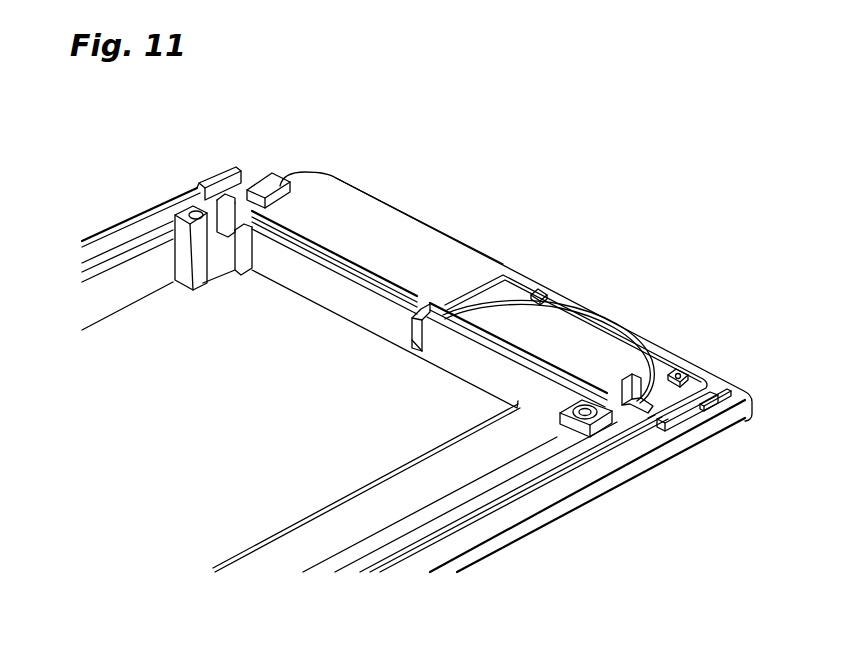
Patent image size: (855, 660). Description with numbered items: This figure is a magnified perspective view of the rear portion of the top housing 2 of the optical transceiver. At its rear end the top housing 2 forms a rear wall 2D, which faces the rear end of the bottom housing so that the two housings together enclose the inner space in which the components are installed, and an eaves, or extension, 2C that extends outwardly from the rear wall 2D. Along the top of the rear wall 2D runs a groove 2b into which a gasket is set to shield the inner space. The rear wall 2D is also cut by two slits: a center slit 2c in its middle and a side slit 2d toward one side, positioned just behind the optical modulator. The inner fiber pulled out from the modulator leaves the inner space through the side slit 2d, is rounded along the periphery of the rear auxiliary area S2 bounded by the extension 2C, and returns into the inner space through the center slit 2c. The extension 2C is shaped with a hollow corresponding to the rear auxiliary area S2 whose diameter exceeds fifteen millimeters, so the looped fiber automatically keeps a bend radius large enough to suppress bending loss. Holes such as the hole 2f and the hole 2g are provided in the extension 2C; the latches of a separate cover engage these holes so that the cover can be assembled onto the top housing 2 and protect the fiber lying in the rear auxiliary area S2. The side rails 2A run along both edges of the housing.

The top housing 2 is at (418, 139).
The guide rail 2A is at (217, 198).
The groove 2b is at (355, 262).
The center slit 2c is at (413, 334).
The side slit 2d is at (615, 420).
The hole 2f is at (687, 371).
The hole 2g is at (524, 290).
The eaves 2C is at (486, 256).
The rear wall 2D is at (378, 305).
The rear auxiliary area S2 is at (640, 334).